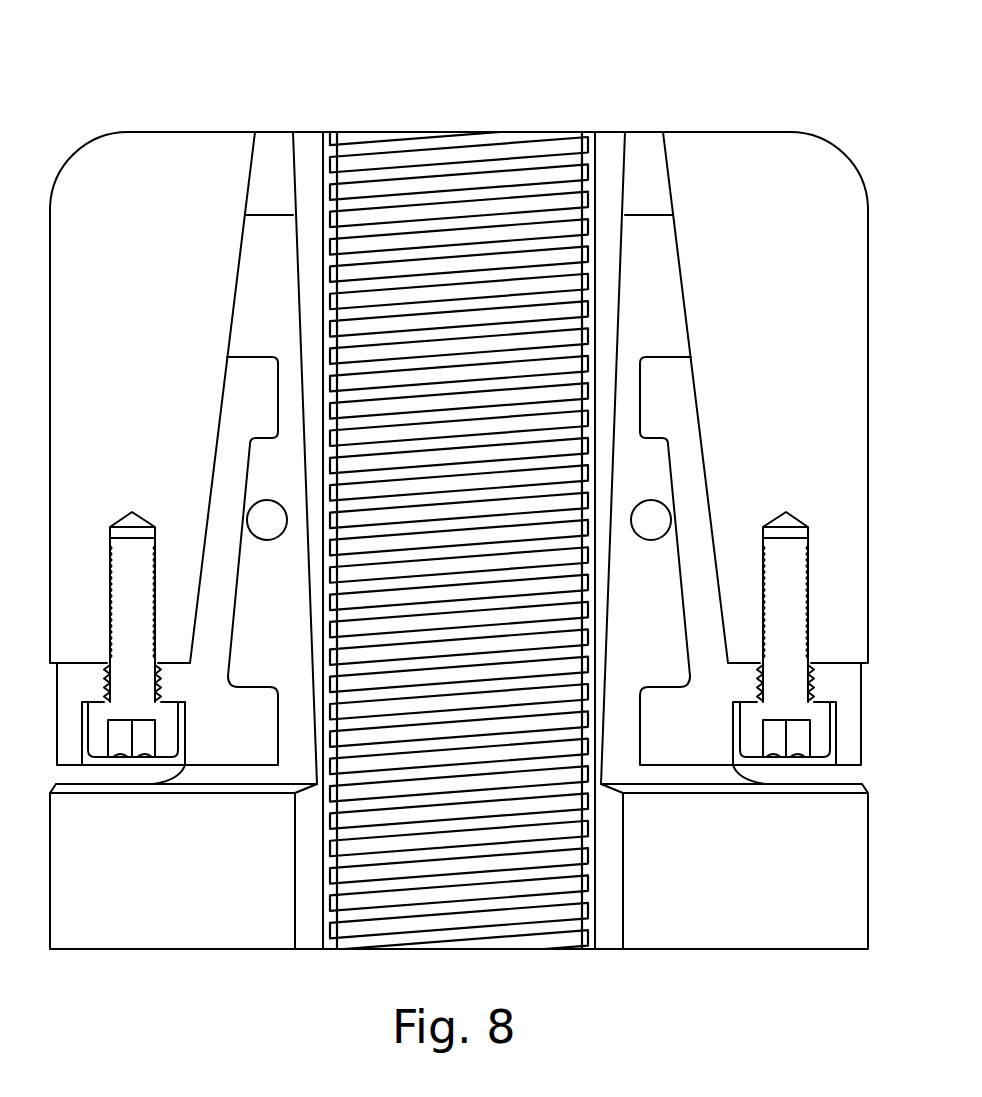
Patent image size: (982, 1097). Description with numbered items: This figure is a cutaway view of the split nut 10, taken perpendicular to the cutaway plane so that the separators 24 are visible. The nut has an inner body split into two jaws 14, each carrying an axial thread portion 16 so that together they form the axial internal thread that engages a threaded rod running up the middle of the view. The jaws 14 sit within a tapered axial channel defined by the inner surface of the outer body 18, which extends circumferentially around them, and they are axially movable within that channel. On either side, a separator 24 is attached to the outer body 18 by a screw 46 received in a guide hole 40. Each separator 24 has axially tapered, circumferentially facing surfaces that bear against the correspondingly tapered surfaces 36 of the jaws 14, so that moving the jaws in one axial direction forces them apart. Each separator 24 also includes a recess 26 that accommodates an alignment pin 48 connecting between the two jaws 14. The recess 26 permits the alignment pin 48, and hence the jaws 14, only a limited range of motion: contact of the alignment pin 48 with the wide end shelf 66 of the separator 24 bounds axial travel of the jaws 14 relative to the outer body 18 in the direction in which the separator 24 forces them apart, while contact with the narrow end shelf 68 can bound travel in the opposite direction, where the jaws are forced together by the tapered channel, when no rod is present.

The split nut 10 is at (799, 92).
The jaws 14 is at (278, 148).
The axial thread portion 16 is at (532, 917).
The outer body 18 is at (845, 460).
The separator 24 is at (77, 690).
The recess 26 is at (228, 638).
The axially tapered circumferentially facing surfaces 36 is at (291, 619).
The guide holes 40 is at (110, 530).
The screws 46 is at (103, 755).
The alignment pin 48 is at (282, 543).
The wide end shelf 66 is at (258, 683).
The narrow end shelf 68 is at (263, 441).